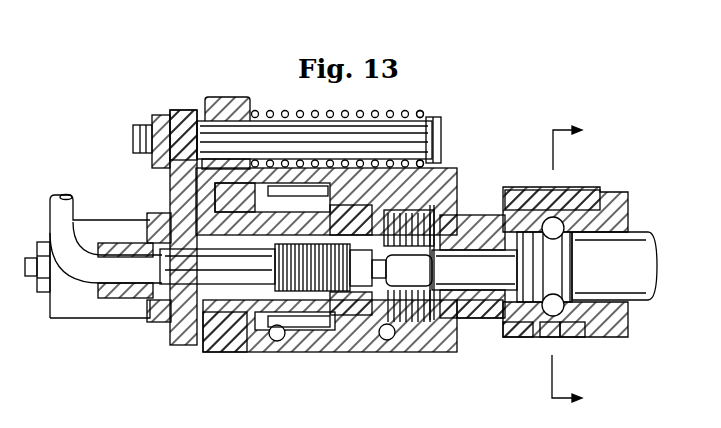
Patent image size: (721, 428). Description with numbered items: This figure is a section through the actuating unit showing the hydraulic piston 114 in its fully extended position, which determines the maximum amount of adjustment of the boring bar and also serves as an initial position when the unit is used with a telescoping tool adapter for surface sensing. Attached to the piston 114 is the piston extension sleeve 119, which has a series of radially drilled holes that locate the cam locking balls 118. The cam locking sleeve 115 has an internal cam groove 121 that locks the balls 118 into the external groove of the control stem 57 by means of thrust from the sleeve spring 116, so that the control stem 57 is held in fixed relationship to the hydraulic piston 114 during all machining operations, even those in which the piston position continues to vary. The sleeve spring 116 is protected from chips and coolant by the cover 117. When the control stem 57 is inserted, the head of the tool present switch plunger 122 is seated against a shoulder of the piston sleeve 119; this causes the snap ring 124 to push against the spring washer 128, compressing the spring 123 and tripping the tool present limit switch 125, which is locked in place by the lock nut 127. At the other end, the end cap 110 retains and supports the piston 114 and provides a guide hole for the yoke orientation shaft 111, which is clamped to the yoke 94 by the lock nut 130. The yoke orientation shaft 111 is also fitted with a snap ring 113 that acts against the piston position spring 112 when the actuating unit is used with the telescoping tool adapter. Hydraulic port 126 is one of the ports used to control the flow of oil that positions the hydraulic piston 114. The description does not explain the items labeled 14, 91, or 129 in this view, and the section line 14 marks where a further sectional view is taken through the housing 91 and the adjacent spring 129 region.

The section line 14- 14 is at (582, 263).
The control stem 57 is at (640, 232).
The housing 91 is at (452, 172).
The yoke 94 is at (186, 112).
The end cap 110 is at (215, 100).
The yoke orientation shaft 111 is at (441, 146).
The piston position spring 112 is at (406, 112).
The snap ring 113 is at (432, 112).
The hydraulic piston 114 is at (470, 312).
The cam locking sleeve 115 is at (528, 350).
The sleeve spring 116 is at (575, 338).
The cover 117 is at (560, 338).
The cam locking balls 118 is at (565, 190).
The piston extension sleeve 119 is at (615, 188).
The internal cam groove 121 is at (527, 236).
The tool present switch plunger 122 is at (440, 305).
The spring 123 is at (366, 348).
The snap ring 124 is at (430, 322).
The tool present limit switch 125 is at (204, 346).
The hydraulic port 126 is at (252, 346).
The lock nut 127 is at (321, 350).
The spring washer 128 is at (434, 210).
The spring 129 is at (395, 322).
The lock nut 130 is at (160, 118).